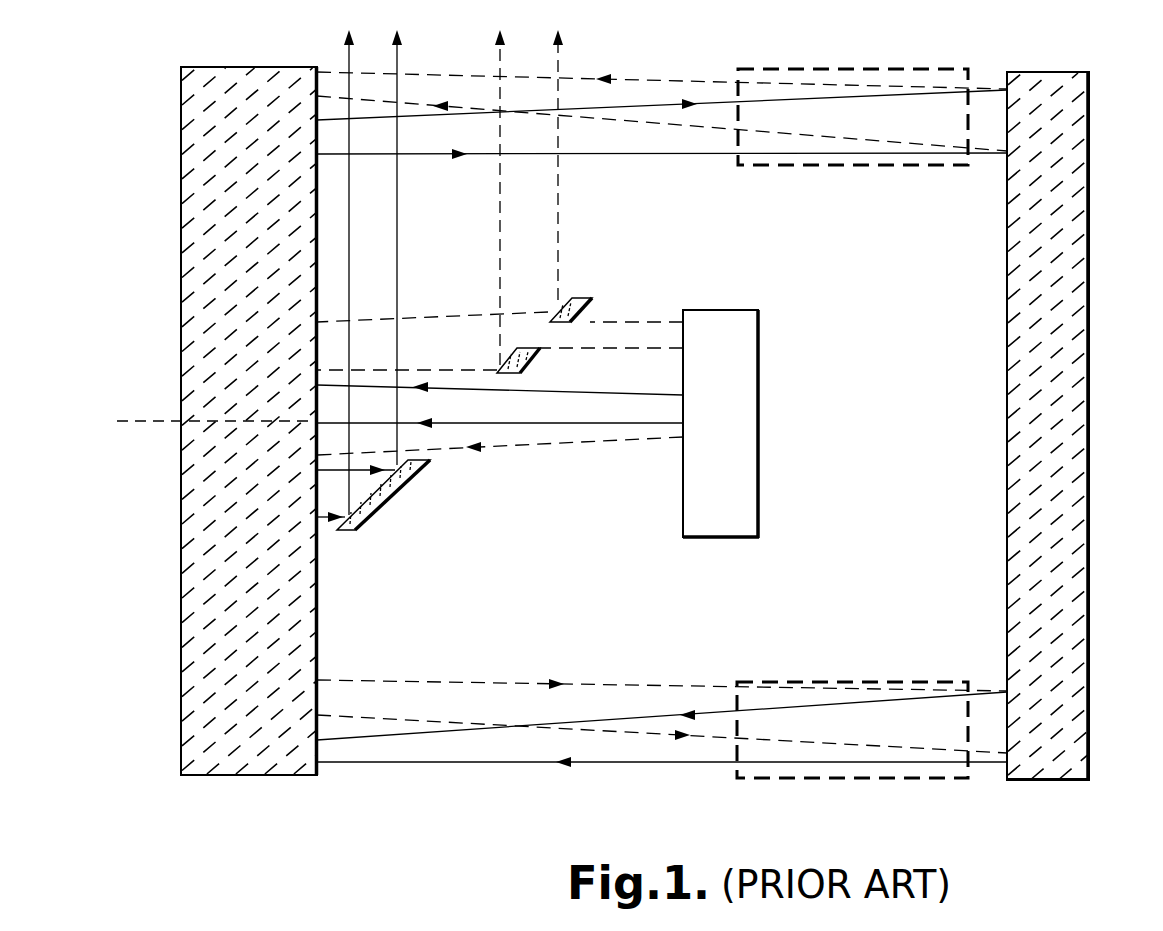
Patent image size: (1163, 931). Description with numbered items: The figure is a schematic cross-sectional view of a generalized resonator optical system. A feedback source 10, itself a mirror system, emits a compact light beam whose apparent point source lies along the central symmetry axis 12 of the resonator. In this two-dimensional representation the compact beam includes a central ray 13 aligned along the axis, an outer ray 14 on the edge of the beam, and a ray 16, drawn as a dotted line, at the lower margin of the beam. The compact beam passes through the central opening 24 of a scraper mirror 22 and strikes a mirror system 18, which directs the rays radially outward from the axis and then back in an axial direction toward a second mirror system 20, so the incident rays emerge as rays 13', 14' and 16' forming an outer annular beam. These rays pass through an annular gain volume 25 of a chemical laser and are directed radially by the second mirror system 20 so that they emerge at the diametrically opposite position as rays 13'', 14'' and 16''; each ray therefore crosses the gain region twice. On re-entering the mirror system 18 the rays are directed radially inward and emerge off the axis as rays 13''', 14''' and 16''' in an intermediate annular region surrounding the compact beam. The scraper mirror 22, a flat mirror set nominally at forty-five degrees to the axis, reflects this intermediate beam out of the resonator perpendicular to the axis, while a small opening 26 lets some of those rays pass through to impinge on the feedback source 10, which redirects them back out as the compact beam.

The feedback source 10 is at (758, 498).
The central symmetry axis 12 is at (142, 420).
The central ray 13 is at (500, 466).
The ray 13' is at (662, 72).
The ray 13'' is at (662, 783).
The emerging ray 13''' is at (380, 289).
The outer ray 14 is at (500, 448).
The ray 14' is at (662, 154).
The ray 14'' is at (662, 750).
The emerging ray 14''' is at (353, 308).
The ray 16 is at (500, 475).
The ray 16' is at (662, 658).
The ray 16'' is at (662, 142).
The emerging ray 16''' is at (500, 308).
The mirror system 18 is at (190, 616).
The second mirror system 20 is at (1089, 214).
The scraper mirror 22 is at (403, 490).
The central opening 24 is at (427, 457).
The annular gain volume 25 is at (823, 165).
The small opening 26 is at (553, 298).